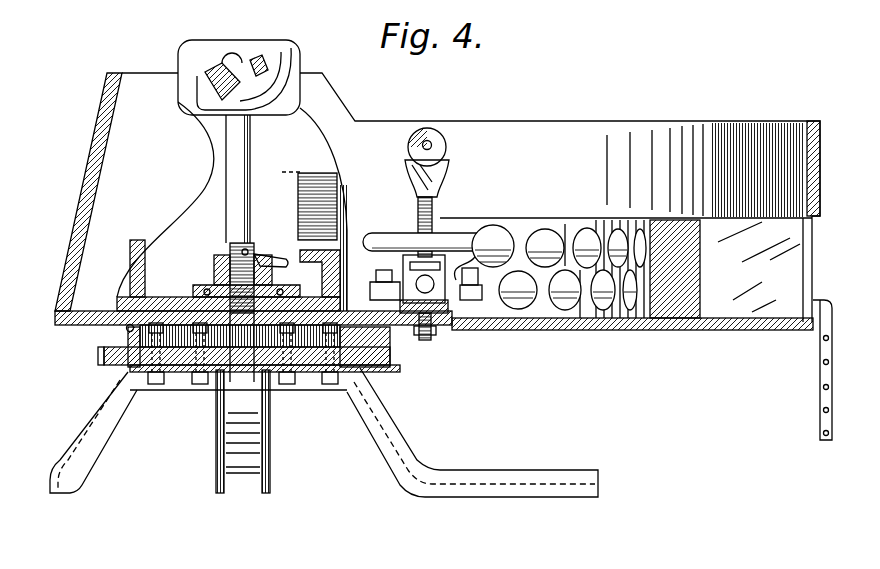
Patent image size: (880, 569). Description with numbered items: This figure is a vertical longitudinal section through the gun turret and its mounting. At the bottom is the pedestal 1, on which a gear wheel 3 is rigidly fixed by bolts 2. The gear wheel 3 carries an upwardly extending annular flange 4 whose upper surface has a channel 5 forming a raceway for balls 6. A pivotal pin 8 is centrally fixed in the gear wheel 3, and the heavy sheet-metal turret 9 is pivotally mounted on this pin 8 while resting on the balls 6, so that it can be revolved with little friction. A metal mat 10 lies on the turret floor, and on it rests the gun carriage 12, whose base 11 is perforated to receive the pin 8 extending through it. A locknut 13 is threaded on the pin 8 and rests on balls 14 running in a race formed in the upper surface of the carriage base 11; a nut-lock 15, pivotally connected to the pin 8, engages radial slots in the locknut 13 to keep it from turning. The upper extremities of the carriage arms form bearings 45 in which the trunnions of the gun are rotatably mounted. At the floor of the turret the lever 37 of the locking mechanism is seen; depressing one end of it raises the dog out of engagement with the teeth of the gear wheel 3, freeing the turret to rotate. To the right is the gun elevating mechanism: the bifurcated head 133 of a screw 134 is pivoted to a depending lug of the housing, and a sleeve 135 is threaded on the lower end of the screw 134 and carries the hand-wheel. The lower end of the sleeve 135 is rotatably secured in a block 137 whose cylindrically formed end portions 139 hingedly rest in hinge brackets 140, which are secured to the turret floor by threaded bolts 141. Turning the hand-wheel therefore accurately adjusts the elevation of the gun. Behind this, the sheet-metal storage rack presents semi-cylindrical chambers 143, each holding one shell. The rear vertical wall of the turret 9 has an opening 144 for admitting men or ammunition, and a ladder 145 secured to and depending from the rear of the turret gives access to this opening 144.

The pedestal 1 is at (390, 445).
The bolts 2 is at (165, 378).
The gear wheel 3 is at (366, 373).
The annular flange 4 is at (364, 354).
The channel 5 is at (126, 328).
The balls 6 is at (128, 338).
The pivotal pin 8 is at (252, 257).
The turret 9 is at (586, 136).
The metal mat 10 is at (170, 299).
The carriage base 11 is at (150, 292).
The gun carriage 12 is at (302, 172).
The locknut 13 is at (271, 280).
The balls 14 is at (295, 296).
The nut-lock 15 is at (274, 262).
The lever 37 is at (478, 262).
The bearings 45 is at (248, 62).
The bifurcated head 133 is at (448, 162).
The screw 134 is at (434, 222).
The sleeve 135 is at (412, 236).
The block 137 is at (470, 310).
The end portions 139 is at (430, 338).
The hinge brackets 140 is at (496, 331).
The threaded bolts 141 is at (390, 281).
The chambers 143 is at (550, 242).
The opening 144 is at (803, 271).
The ladder 145 is at (821, 380).